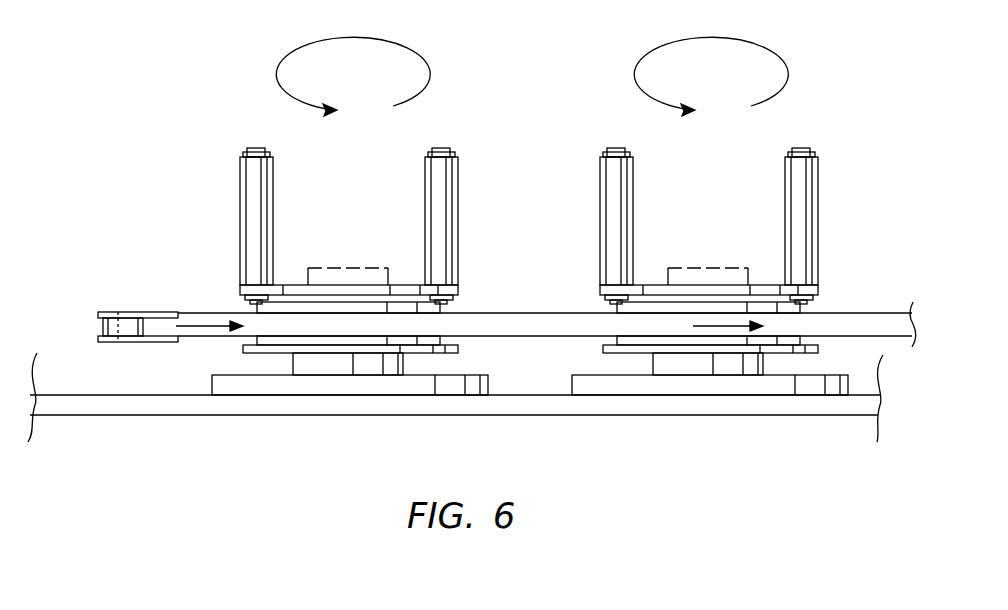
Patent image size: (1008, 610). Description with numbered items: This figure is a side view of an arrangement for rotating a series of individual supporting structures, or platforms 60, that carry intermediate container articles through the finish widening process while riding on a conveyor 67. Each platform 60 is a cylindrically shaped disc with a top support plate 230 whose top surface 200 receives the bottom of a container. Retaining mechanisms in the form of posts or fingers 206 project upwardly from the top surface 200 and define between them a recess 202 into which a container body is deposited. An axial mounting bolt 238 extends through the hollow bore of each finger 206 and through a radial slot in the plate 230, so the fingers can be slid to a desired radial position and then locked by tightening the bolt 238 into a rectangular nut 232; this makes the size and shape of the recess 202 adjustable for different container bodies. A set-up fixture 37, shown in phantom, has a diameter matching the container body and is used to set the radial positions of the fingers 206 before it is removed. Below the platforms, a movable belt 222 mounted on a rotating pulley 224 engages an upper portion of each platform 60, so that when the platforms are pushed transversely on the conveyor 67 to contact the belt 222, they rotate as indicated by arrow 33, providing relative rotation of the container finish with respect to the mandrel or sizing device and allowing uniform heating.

The arrow 33 is at (428, 72).
The retaining mechanisms 206 is at (243, 155).
The axial mounting bolt 238 is at (812, 152).
The recess 202 is at (367, 219).
The top surface 200 is at (283, 287).
The set-up fixture 37 is at (363, 268).
The platform 60 is at (239, 299).
The top support plate 230 is at (460, 295).
The nut 232 is at (818, 297).
The rotating pulley 224 is at (112, 312).
The movable belt 222 is at (213, 337).
The conveyor 67 is at (132, 414).